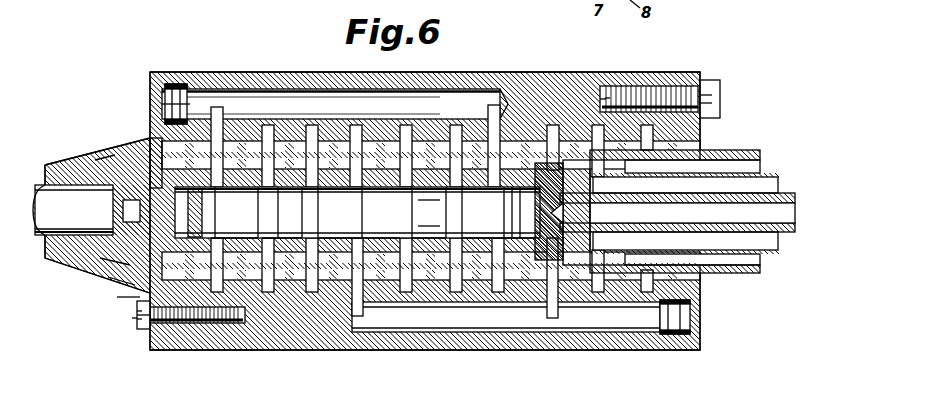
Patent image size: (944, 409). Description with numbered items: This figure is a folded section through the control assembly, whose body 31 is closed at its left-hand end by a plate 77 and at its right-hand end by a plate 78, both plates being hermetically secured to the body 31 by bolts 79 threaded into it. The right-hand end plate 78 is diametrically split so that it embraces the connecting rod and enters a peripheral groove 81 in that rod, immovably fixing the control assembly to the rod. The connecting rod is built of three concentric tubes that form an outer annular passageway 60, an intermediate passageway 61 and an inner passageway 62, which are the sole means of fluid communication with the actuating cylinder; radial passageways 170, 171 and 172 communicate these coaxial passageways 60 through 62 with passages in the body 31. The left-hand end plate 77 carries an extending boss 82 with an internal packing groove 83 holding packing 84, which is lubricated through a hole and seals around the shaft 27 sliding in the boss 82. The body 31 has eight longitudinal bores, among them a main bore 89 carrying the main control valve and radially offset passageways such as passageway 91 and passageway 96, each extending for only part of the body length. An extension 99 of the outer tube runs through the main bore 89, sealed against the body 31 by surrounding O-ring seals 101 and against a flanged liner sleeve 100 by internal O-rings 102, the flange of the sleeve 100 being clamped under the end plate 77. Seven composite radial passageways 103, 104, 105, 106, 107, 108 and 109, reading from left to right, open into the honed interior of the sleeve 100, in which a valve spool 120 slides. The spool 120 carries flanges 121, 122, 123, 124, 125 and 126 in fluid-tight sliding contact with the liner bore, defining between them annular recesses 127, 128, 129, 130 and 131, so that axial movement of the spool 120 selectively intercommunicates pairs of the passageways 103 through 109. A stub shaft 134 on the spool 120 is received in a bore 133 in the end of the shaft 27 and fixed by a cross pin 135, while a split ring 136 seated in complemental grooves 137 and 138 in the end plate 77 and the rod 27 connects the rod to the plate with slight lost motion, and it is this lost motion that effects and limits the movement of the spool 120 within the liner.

The shaft 27 is at (42, 185).
The body 31 is at (380, 352).
The outer annular passageway 60 is at (675, 211).
The intermediate passageway 61 is at (677, 213).
The inner passageway 62 is at (692, 213).
The left-hand end plate 77 is at (157, 350).
The right-hand end plate 78 is at (703, 321).
The bolts 79 is at (132, 318).
The peripheral groove 81 is at (703, 148).
The extending boss 82 is at (100, 258).
The internal packing groove 83 is at (95, 160).
The packing 84 is at (138, 140).
The main bore 89 is at (233, 138).
The radially offset passageway 91 is at (622, 325).
The radially offset passageway 96 is at (335, 104).
The extension of the outer tube 99 is at (515, 140).
The flanged liner sleeve 100 is at (565, 143).
The pin 101 is at (432, 140).
The internal O-rings 102 is at (397, 143).
The composite radial passageway 103 is at (210, 350).
The composite radial passageway 104 is at (258, 350).
The composite radial passageway 105 is at (288, 348).
The composite radial passageway 106 is at (353, 278).
The composite radial passageway 107 is at (405, 278).
The composite radial passageway 108 is at (455, 290).
The composite radial passageway 109 is at (497, 300).
The valve spool 120 is at (357, 212).
The spool flange 121 is at (223, 212).
The spool flange 122 is at (290, 212).
The spool flange 123 is at (340, 212).
The spool flange 124 is at (429, 212).
The spool flange 125 is at (434, 213).
The spool flange 126 is at (491, 212).
The annular recess 127 is at (234, 232).
The annular recess 128 is at (282, 232).
The annular recess 129 is at (359, 232).
The annular recess 130 is at (431, 232).
The annular recess 131 is at (498, 232).
The bore 133 is at (108, 277).
The stub shaft 134 is at (117, 297).
The cross pin 135 is at (138, 304).
The split ring 136 is at (136, 322).
The groove 137 is at (140, 138).
The groove 138 is at (133, 133).
The radial passageway 170 is at (697, 73).
The radial passageway 171 is at (637, 138).
The radial passageway 172 is at (605, 98).